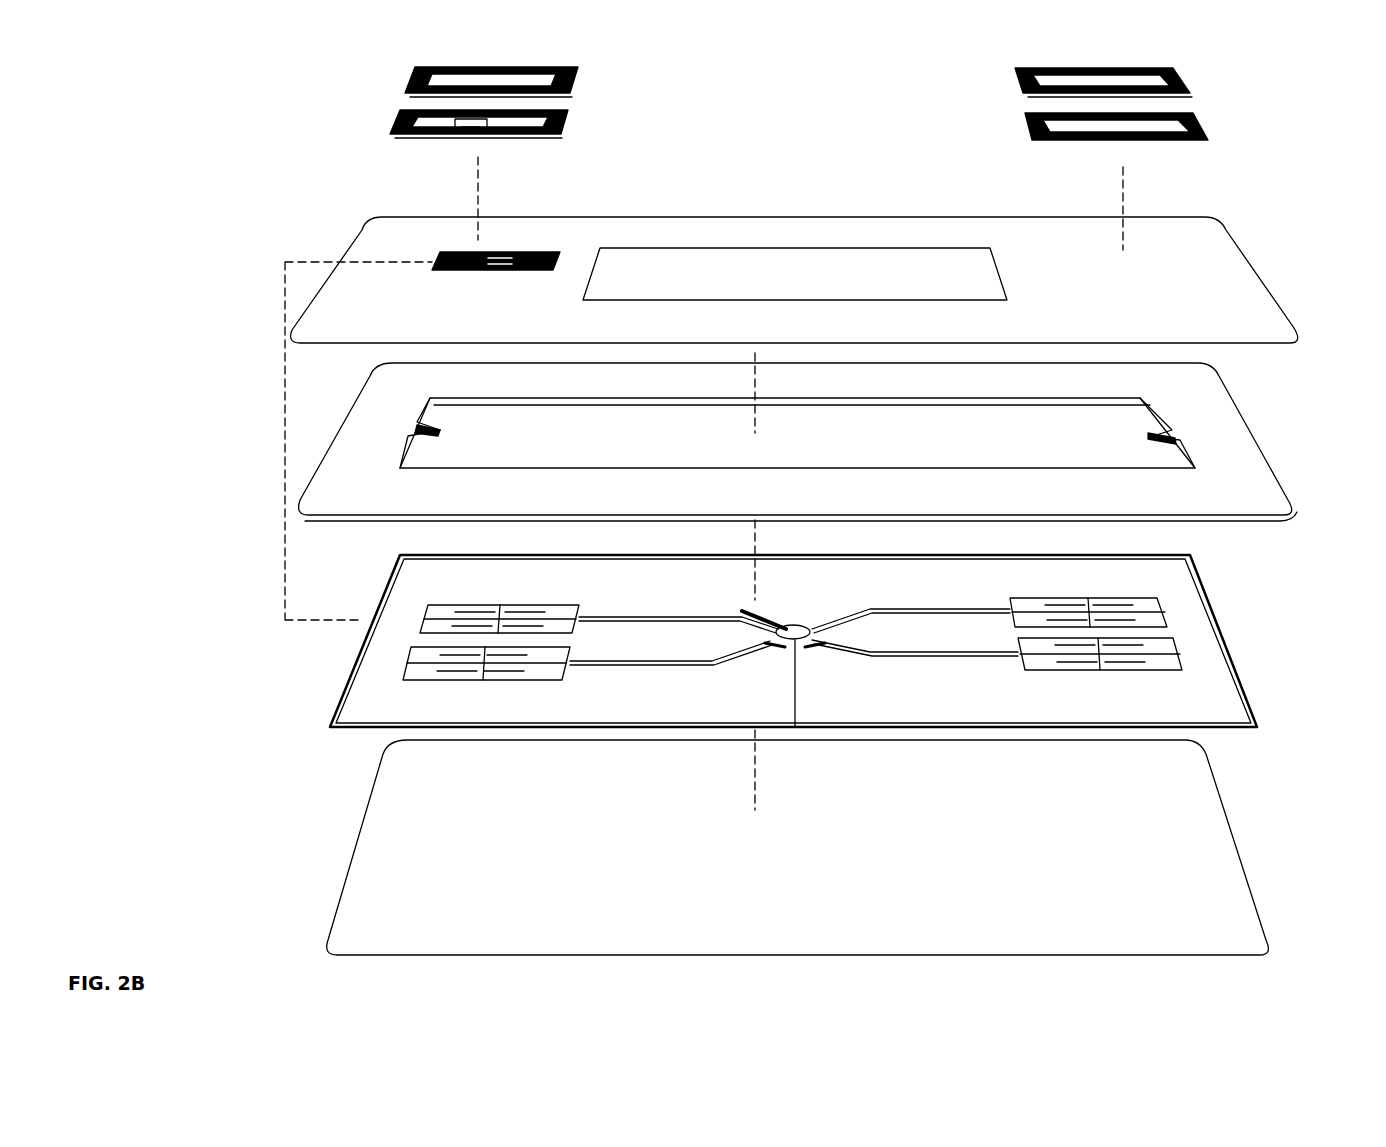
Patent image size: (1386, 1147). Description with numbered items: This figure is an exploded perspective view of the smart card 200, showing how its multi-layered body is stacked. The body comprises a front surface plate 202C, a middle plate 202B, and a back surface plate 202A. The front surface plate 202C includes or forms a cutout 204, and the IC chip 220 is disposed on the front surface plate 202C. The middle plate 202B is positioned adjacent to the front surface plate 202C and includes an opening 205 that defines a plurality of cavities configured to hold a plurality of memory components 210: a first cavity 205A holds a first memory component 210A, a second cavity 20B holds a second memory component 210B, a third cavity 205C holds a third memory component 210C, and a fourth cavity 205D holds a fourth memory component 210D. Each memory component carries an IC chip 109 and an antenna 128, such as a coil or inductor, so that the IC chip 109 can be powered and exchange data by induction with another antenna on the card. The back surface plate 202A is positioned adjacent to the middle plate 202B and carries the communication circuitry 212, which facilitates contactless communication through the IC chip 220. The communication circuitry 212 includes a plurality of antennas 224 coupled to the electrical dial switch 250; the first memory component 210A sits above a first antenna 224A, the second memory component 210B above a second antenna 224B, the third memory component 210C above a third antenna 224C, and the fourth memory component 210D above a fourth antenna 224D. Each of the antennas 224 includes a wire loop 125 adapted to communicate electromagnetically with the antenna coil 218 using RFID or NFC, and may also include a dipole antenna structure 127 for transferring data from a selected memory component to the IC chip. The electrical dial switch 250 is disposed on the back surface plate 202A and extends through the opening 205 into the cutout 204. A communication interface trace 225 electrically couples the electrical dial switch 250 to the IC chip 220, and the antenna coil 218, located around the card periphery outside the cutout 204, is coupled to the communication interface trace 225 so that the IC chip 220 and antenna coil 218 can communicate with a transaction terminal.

The smart card 200 is at (199, 190).
The memory components 210 is at (985, 105).
The first memory component 210A is at (410, 90).
The second memory component 210B is at (398, 130).
The third memory component 210C is at (1190, 82).
The fourth memory component 210D is at (1205, 120).
The antenna 128 is at (568, 118).
The IC chip 109 is at (466, 128).
The IC chip 220 is at (437, 252).
The front surface plate 202C is at (1240, 243).
The cutout 204 is at (801, 281).
The middle plate 202B is at (1250, 432).
The opening 205 is at (818, 444).
The first cavity 205A is at (438, 413).
The second cavity 20B is at (422, 452).
The third cavity 205C is at (1160, 418).
The fourth cavity 205D is at (1175, 448).
The communication circuitry 212 is at (263, 627).
The antenna coil 218 is at (362, 730).
The plurality of antennas 224 is at (1190, 663).
The first antenna 224A is at (421, 607).
The second antenna 224B is at (405, 672).
The third antenna 224C is at (1177, 604).
The fourth antenna 224D is at (1178, 668).
The wire loop 125 is at (448, 604).
The dipole antenna structure 127 is at (514, 618).
The electrical dial switch 250 is at (747, 607).
The communication interface trace 225 is at (792, 658).
The back surface plate 202A is at (1250, 864).